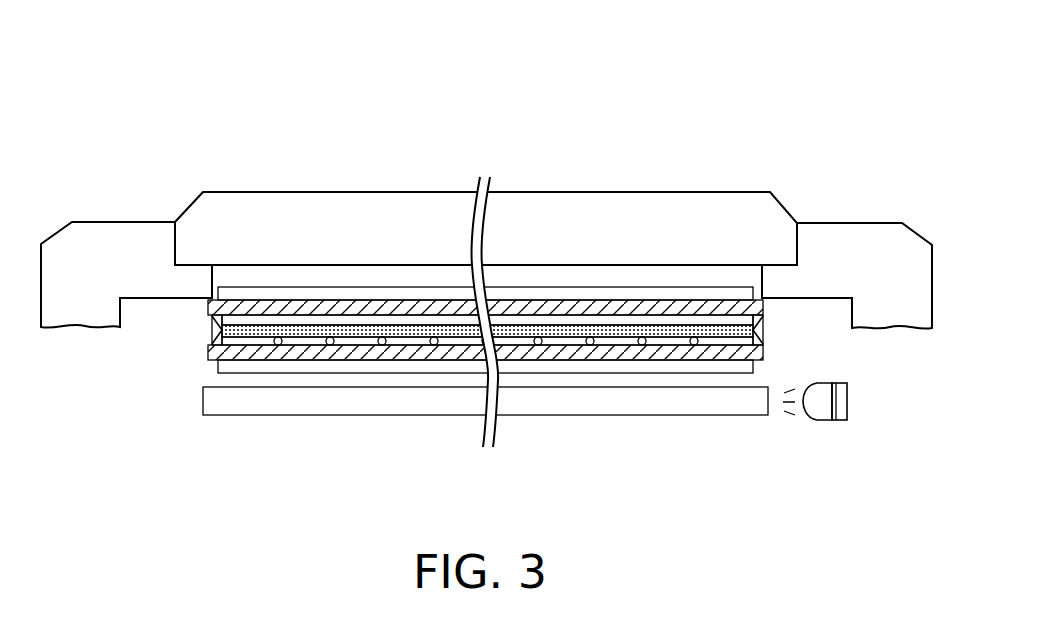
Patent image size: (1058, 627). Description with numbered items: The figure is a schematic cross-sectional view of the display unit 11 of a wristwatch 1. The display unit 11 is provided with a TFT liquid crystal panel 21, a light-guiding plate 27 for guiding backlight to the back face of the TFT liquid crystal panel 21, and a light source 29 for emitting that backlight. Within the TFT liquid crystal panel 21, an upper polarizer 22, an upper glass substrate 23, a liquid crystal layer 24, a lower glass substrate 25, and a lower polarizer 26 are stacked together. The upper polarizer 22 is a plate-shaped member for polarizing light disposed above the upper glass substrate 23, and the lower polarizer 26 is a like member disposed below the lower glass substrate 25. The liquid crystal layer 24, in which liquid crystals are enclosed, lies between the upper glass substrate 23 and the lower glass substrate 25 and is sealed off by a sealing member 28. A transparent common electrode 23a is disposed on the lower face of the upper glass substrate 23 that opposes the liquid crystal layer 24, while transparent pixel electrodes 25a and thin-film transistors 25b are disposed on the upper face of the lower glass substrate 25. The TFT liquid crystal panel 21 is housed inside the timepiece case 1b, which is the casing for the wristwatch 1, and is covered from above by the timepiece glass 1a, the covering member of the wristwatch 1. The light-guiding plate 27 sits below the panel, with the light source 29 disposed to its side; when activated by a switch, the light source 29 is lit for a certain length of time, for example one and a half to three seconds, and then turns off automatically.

The wristwatch 1 is at (486, 182).
The timepiece glass 1a is at (250, 192).
The timepiece case 1b is at (110, 222).
The display unit 11 is at (435, 305).
The TFT liquid crystal panel 21 is at (277, 285).
The upper polarizer 22 is at (323, 292).
The upper glass substrate 23 is at (372, 307).
The transparent common electrode 23a is at (387, 318).
The liquid crystal layer 24 is at (413, 330).
The lower glass substrate 25 is at (485, 417).
The transparent pixel electrodes 25a is at (400, 344).
The thin-film transistors 25b is at (433, 346).
The lower polarizer 26 is at (327, 363).
The light-guiding plate 27 is at (275, 402).
The sealing member 28 is at (208, 330).
The light source 29 is at (847, 401).